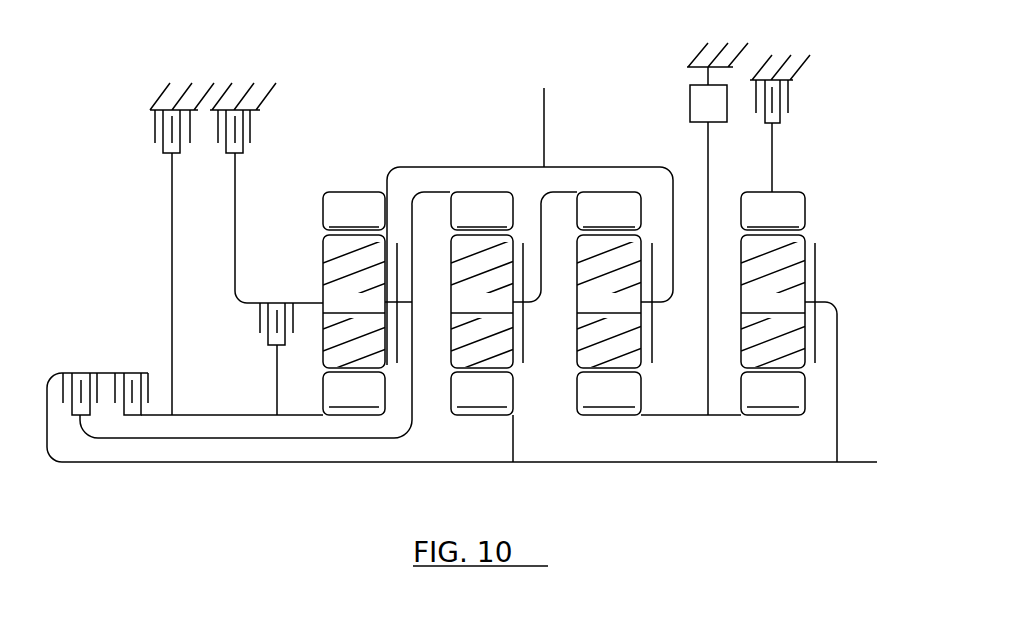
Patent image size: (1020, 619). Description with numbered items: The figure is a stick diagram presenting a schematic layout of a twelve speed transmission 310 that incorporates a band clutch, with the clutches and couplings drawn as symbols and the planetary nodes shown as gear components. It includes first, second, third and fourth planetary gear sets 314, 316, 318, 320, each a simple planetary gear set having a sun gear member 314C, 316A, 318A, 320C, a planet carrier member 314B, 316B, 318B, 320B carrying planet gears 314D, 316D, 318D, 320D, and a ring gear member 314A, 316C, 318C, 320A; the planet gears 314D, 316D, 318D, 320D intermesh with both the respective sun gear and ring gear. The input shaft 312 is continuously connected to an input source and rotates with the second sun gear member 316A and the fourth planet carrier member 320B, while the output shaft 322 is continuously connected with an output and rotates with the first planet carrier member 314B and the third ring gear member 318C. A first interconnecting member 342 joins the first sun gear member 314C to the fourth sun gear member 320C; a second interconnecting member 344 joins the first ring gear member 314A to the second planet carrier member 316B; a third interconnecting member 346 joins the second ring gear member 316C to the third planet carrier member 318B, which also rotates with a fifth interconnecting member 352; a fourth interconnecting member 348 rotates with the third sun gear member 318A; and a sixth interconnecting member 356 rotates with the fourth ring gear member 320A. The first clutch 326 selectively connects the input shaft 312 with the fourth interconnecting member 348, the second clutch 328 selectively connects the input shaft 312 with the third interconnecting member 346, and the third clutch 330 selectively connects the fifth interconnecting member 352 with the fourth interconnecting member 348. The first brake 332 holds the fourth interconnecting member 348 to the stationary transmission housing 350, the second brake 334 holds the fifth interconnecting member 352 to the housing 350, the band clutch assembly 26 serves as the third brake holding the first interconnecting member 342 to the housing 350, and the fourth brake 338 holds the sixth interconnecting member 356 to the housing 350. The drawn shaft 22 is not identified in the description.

The twelve speed transmission 310 is at (108, 80).
The transmission housing 350 is at (160, 93).
The first brake 332 is at (152, 135).
The second brake 334 is at (250, 135).
The input shaft 22 is at (693, 60).
The band clutch assembly 26 is at (690, 103).
The fourth brake 338 is at (790, 102).
The sixth interconnecting member 356 is at (773, 160).
The output shaft 322 is at (540, 101).
The second interconnecting member 344 is at (552, 207).
The fifth interconnecting member 352 is at (236, 262).
The third clutch 330 is at (258, 322).
The input shaft 312 is at (852, 464).
The second clutch 328 is at (100, 372).
The first clutch 326 is at (150, 392).
The fourth interconnecting member 348 is at (218, 416).
The third interconnecting member 346 is at (413, 378).
The third planetary gear set 318 is at (392, 323).
The third sun gear member 318A is at (354, 393).
The third planet carrier member 318B is at (415, 260).
The third ring gear member 318C is at (354, 211).
The third planet gears 318D is at (354, 296).
The second planetary gear set 316 is at (507, 353).
The second sun gear member 316A is at (482, 417).
The second planet carrier member 316B is at (528, 347).
The second ring gear member 316C is at (482, 211).
The second planet gears 316D is at (482, 296).
The first planetary gear set 314 is at (638, 353).
The first ring gear member 314A is at (609, 211).
The first planet carrier member 314B is at (653, 345).
The first sun gear member 314C is at (609, 393).
The first planet gears 314D is at (609, 295).
The first interconnecting member 342 is at (683, 416).
The fourth planetary gear set 320 is at (810, 353).
The fourth ring gear member 320A is at (773, 211).
The fourth planet carrier member 320B is at (816, 283).
The fourth sun gear member 320C is at (773, 393).
The fourth planet gears 320D is at (773, 295).